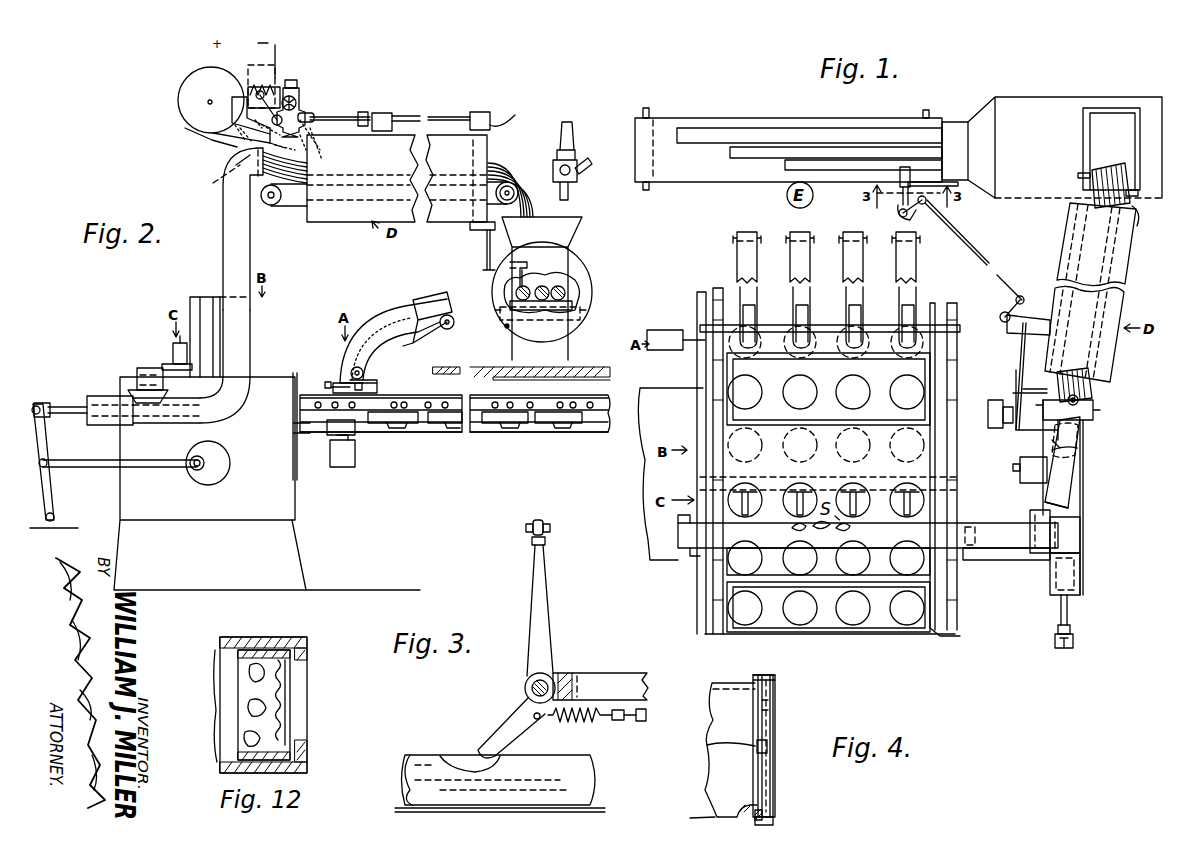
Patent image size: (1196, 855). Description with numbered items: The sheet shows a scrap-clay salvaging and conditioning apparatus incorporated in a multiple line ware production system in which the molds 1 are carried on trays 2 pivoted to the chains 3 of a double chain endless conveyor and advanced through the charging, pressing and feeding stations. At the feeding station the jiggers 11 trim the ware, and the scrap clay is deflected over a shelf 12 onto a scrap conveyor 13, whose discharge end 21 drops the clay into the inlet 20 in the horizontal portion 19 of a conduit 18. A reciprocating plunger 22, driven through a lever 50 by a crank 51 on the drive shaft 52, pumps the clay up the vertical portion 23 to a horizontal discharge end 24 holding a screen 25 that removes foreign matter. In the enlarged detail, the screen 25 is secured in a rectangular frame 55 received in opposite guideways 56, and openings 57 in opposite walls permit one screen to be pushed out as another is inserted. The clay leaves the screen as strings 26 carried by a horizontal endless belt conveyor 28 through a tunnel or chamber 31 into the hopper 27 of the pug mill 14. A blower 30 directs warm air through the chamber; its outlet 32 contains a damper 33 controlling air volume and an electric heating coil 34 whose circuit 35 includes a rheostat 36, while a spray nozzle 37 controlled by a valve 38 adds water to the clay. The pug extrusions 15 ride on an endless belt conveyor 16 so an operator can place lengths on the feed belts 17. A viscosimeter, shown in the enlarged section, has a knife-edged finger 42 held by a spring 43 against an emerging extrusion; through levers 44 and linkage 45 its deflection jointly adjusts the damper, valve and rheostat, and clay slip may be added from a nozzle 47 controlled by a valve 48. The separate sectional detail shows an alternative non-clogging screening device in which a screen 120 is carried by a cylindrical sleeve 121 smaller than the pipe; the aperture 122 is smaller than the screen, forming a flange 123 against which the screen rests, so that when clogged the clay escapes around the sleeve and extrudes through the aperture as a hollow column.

In FIG. 2, the molds 1 is at (335, 385).
In FIG. 1, the molds 1 is at (752, 392).
In FIG. 2, the trays 2 is at (410, 428).
In FIG. 1, the trays 2 is at (735, 410).
In FIG. 2, the chains 3 is at (592, 433).
In FIG. 1, the chains 3 is at (712, 296).
In FIG. 2, the jiggers 11 is at (178, 342).
In FIG. 1, the jiggers 11 is at (755, 512).
In FIG. 2, the shelf 12 is at (168, 364).
In FIG. 1, the shelf 12 is at (1000, 503).
In FIG. 2, the scrap conveyor 13 is at (137, 372).
In FIG. 1, the scrap conveyor 13 is at (988, 548).
In FIG. 2, the pug mill 14 is at (580, 296).
In FIG. 1, the pug mill 14 is at (1044, 100).
In FIG. 2, the pug extrusions 15 is at (548, 288).
In FIG. 1, the pug extrusions 15 is at (842, 163).
In FIG. 3, the pug extrusions 15 is at (585, 785).
In FIG. 2, the endless belt conveyor 16 is at (562, 300).
In FIG. 1, the endless belt conveyor 16 is at (740, 127).
In FIG. 3, the endless belt conveyor 16 is at (400, 808).
In FIG. 2, the feed belts 17 is at (448, 300).
In FIG. 1, the feed belts 17 is at (800, 255).
In FIG. 2, the conduit 18 is at (256, 401).
In FIG. 1, the conduit 18 is at (1092, 477).
In FIG. 2, the horizontal portion 19 is at (172, 413).
In FIG. 1, the horizontal portion 19 is at (1088, 508).
In FIG. 2, the inlet 20 is at (112, 398).
In FIG. 1, the inlet 20 is at (1080, 540).
In FIG. 1, the discharge end 21 is at (1038, 522).
In FIG. 2, the reciprocating plunger 22 is at (62, 398).
In FIG. 1, the reciprocating plunger 22 is at (1075, 599).
In FIG. 2, the vertical portion 23 is at (241, 250).
In FIG. 1, the vertical portion 23 is at (1080, 453).
In FIG. 4, the vertical portion 23 is at (718, 814).
In FIG. 2, the horizontal discharge end 24 is at (250, 162).
In FIG. 1, the horizontal discharge end 24 is at (1085, 430).
In FIG. 4, the horizontal discharge end 24 is at (745, 730).
In FIG. 2, the screen 25 is at (213, 183).
In FIG. 4, the screen 25 is at (770, 773).
In FIG. 2, the strings 26 is at (302, 170).
In FIG. 1, the strings 26 is at (1110, 172).
In FIG. 2, the hopper 27 is at (573, 222).
In FIG. 1, the hopper 27 is at (1128, 116).
In FIG. 2, the horizontal endless belt conveyor 28 is at (276, 208).
In FIG. 1, the horizontal endless belt conveyor 28 is at (1138, 224).
In FIG. 2, the blower 30 is at (180, 95).
In FIG. 1, the blower 30 is at (1062, 490).
In FIG. 2, the tunnel or chamber 31 is at (457, 150).
In FIG. 1, the tunnel or chamber 31 is at (1130, 268).
In FIG. 2, the outlet 32 is at (212, 147).
In FIG. 1, the outlet 32 is at (1040, 432).
In FIG. 2, the damper 33 is at (240, 143).
In FIG. 1, the damper 33 is at (1078, 438).
In FIG. 2, the electric heating coil 34 is at (225, 127).
In FIG. 2, the circuit 35 is at (276, 52).
In FIG. 2, the rheostat 36 is at (276, 82).
In FIG. 1, the rheostat 36 is at (990, 412).
In FIG. 2, the spray nozzle 37 is at (300, 90).
In FIG. 1, the spray nozzle 37 is at (1095, 398).
In FIG. 2, the valve 38 is at (300, 104).
In FIG. 2, the knife-edged finger 42 is at (530, 275).
In FIG. 1, the knife-edged finger 42 is at (903, 167).
In FIG. 3, the knife-edged finger 42 is at (492, 735).
In FIG. 1, the spring 43 is at (950, 124).
In FIG. 3, the spring 43 is at (577, 728).
In FIG. 2, the levers 44 is at (383, 112).
In FIG. 1, the levers 44 is at (900, 207).
In FIG. 3, the levers 44 is at (553, 528).
In FIG. 2, the linkage 45 is at (362, 110).
In FIG. 1, the linkage 45 is at (988, 262).
In FIG. 2, the nozzle 47 is at (580, 172).
In FIG. 2, the valve 48 is at (574, 152).
In FIG. 2, the lever 50 is at (50, 450).
In FIG. 1, the lever 50 is at (1064, 650).
In FIG. 2, the crank 51 is at (210, 480).
In FIG. 2, the shaft 52 is at (212, 458).
In FIG. 4, the rectangular frame 55 is at (776, 676).
In FIG. 4, the guideways 56 is at (755, 677).
In FIG. 4, the openings 57 is at (768, 706).
In FIG. 12, the screen 120 is at (280, 670).
In FIG. 12, the cylindrical sleeve 121 is at (237, 654).
In FIG. 12, the aperture 122 is at (300, 712).
In FIG. 12, the flange 123 is at (290, 755).